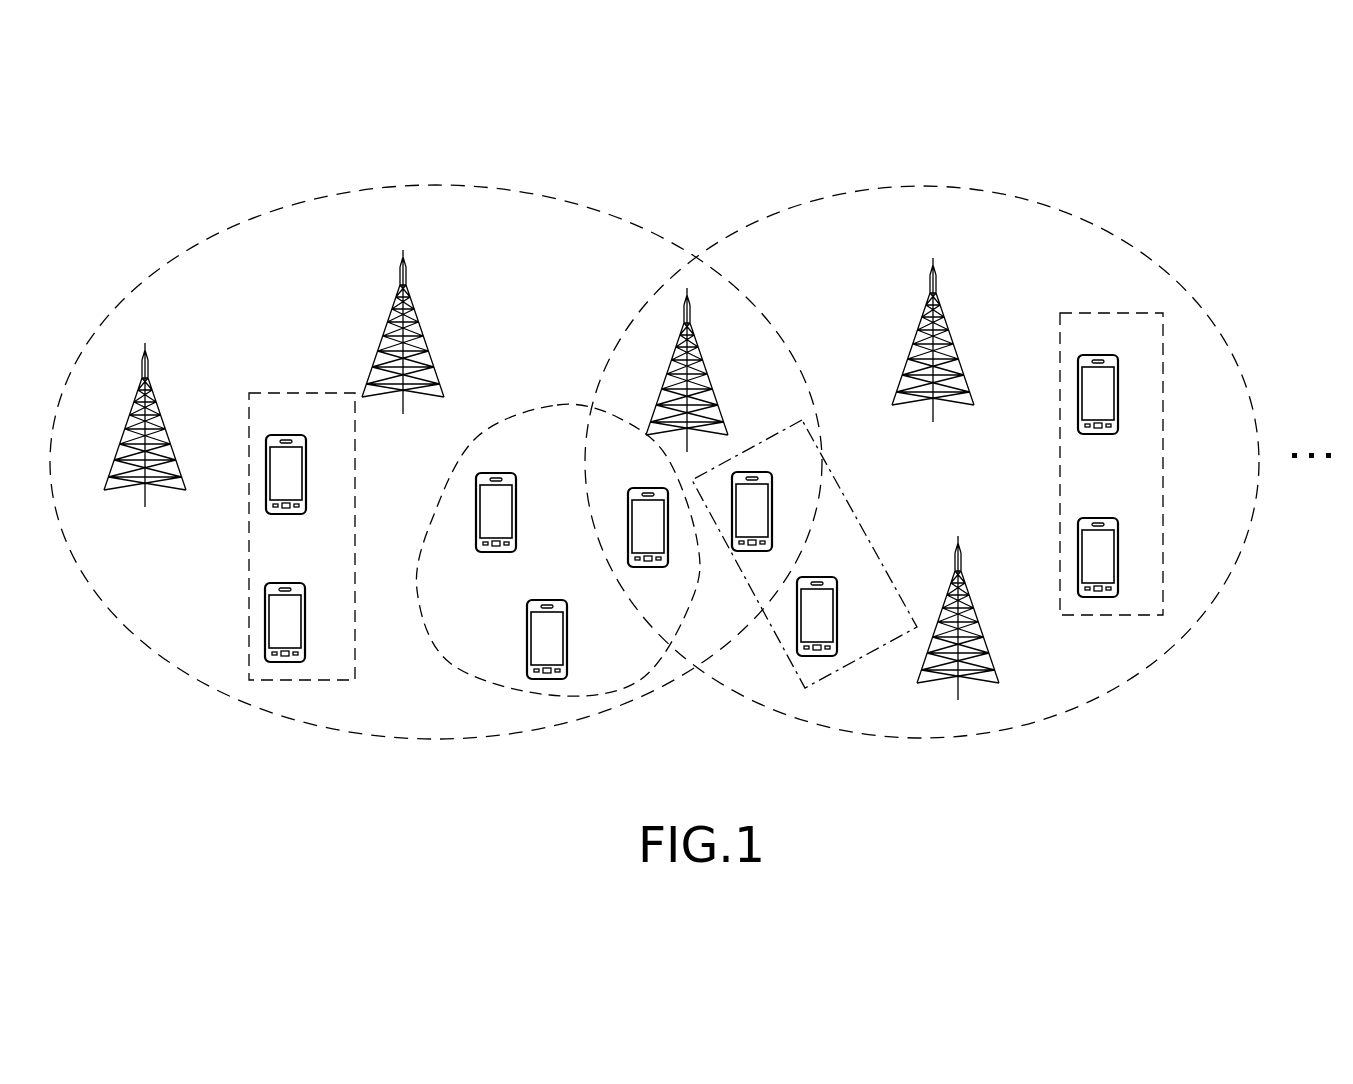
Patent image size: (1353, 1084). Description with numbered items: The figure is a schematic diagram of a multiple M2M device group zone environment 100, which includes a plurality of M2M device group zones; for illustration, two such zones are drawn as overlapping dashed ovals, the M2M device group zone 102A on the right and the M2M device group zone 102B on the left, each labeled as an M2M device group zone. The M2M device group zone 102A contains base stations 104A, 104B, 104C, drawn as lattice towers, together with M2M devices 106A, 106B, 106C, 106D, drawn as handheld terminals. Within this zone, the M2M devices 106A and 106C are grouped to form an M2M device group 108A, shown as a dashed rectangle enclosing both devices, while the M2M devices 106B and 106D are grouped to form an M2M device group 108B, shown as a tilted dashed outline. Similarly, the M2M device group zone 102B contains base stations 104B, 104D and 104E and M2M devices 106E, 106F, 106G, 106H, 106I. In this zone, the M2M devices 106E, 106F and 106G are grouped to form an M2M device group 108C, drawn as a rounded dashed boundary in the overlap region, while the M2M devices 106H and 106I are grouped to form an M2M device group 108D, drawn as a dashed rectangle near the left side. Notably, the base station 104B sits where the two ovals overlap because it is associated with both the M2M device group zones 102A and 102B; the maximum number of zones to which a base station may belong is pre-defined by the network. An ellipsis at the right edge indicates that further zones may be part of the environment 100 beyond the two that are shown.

The M2M device group zone environment 100 is at (984, 768).
The M2M device group zone 102A is at (929, 188).
The M2M device group zone 102B is at (440, 188).
The base station 104A is at (948, 332).
The base station 104B is at (703, 372).
The base station 104C is at (966, 582).
The base station 104D is at (418, 324).
The base station 104E is at (150, 375).
The M2M device 106A is at (1095, 519).
The M2M device 106B is at (750, 474).
The M2M device 106C is at (1095, 356).
The M2M device 106D is at (813, 579).
The M2M device 106E is at (493, 474).
The M2M device 106F is at (652, 489).
The M2M device 106G is at (545, 601).
The M2M device 106H is at (285, 436).
The M2M device 106I is at (283, 584).
The M2M device group 108A is at (1111, 313).
The M2M device group 108B is at (844, 488).
The M2M device group 108C is at (554, 405).
The M2M device group 108D is at (300, 393).